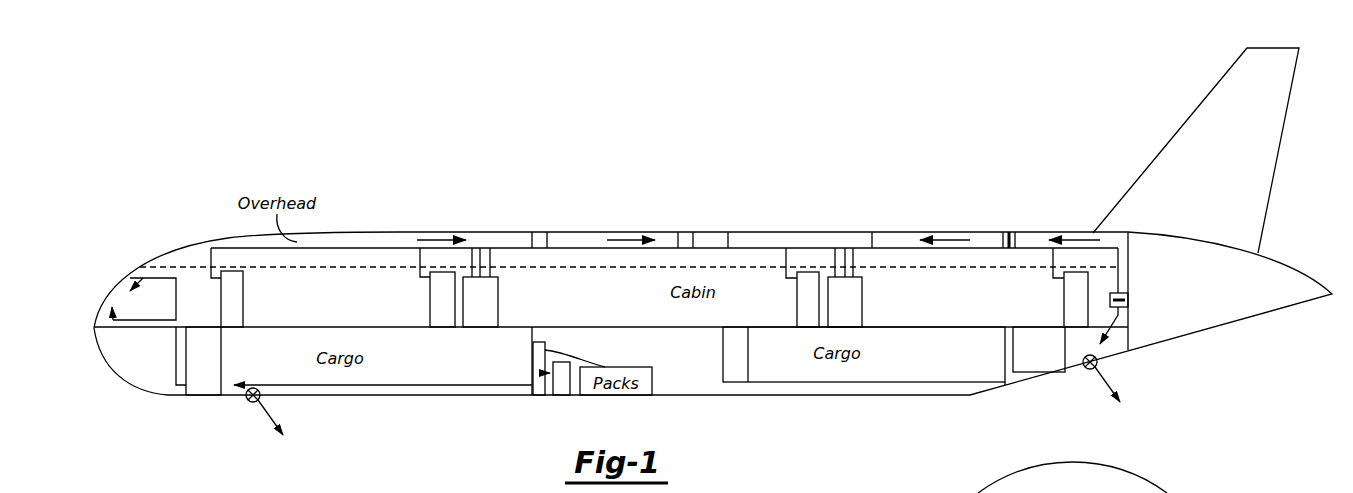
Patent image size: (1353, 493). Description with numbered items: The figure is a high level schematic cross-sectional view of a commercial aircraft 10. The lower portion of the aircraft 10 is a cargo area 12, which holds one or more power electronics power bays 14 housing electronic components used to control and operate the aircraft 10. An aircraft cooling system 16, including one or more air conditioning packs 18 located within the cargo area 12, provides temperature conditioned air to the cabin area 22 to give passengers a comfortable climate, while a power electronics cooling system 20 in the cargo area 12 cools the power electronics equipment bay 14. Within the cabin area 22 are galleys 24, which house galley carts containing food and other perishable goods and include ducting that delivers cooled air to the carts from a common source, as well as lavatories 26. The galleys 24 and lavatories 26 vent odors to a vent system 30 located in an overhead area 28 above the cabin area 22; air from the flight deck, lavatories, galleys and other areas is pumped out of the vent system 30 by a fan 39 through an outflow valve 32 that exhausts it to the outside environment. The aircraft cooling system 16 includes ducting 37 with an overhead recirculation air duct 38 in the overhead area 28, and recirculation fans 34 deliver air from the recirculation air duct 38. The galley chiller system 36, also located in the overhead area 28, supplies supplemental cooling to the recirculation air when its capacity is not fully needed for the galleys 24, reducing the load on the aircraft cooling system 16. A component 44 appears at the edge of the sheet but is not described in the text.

The commercial aircraft 10 is at (713, 241).
The cargo area 12 is at (667, 370).
The power electronics power bay 14 is at (201, 388).
The aircraft cooling system 16 is at (617, 363).
The air conditioning pack 18 is at (572, 385).
The power electronics cooling system 20 is at (537, 360).
The cabin area 22 is at (383, 275).
The galleys 24 is at (245, 305).
The lavatories 26 is at (498, 303).
The overhead area 28 is at (719, 240).
The vent system 30 is at (694, 232).
The outflow valve 32 is at (253, 403).
The recirculation fans 34 is at (547, 240).
The galley chiller system 36 is at (860, 232).
The ducting 37 is at (678, 232).
The overhead recirculation air duct 38 is at (643, 237).
The fan 39 is at (1128, 300).
The component of adjacent figure 44 is at (1198, 491).